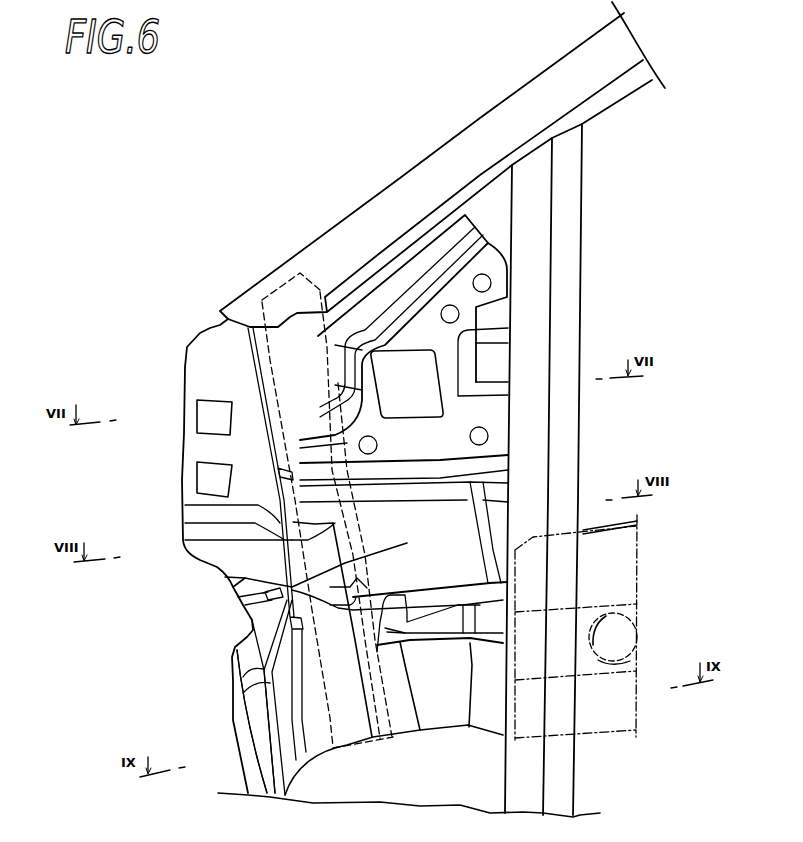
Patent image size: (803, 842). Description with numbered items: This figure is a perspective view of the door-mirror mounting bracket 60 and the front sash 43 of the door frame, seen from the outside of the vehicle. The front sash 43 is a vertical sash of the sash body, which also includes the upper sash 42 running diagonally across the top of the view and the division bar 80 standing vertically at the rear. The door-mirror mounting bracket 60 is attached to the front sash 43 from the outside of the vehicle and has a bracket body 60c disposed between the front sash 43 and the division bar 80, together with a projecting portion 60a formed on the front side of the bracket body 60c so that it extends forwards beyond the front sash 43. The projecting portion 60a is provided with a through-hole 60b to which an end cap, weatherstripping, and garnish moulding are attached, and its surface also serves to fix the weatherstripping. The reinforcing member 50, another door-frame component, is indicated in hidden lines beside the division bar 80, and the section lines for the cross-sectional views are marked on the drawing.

The upper sash 42 is at (340, 236).
The front sash 43 is at (327, 698).
The reinforcing member 50 is at (642, 572).
The door-mirror mounting bracket 60 is at (142, 577).
The projecting portion 60a is at (250, 562).
The through-hole 60b is at (200, 427).
The bracket body 60c is at (313, 587).
The division bar 80 is at (574, 783).